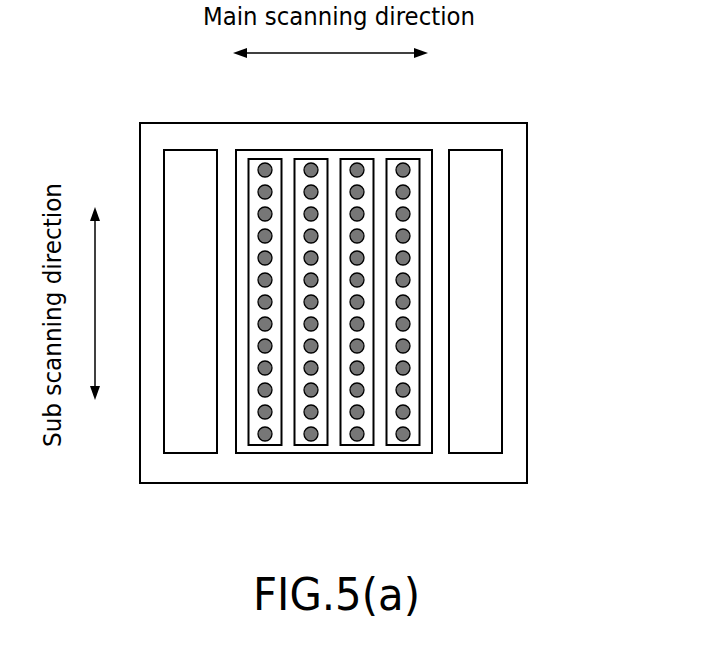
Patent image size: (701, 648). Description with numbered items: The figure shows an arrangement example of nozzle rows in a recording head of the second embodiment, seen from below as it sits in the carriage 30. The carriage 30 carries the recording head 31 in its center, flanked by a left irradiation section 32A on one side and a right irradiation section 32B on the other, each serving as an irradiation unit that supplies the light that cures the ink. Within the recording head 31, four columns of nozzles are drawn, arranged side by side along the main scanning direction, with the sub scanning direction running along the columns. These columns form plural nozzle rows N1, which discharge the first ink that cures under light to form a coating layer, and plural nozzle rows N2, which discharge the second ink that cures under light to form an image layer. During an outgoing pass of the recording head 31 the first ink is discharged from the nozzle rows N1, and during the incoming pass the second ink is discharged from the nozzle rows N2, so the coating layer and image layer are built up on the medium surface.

The carriage 30 is at (556, 121).
The recording head 31 is at (336, 448).
The left irradiation section 32A is at (192, 447).
The right irradiation section 32B is at (476, 447).
The nozzle rows N1 is at (355, 158).
The nozzle rows N2 is at (402, 158).